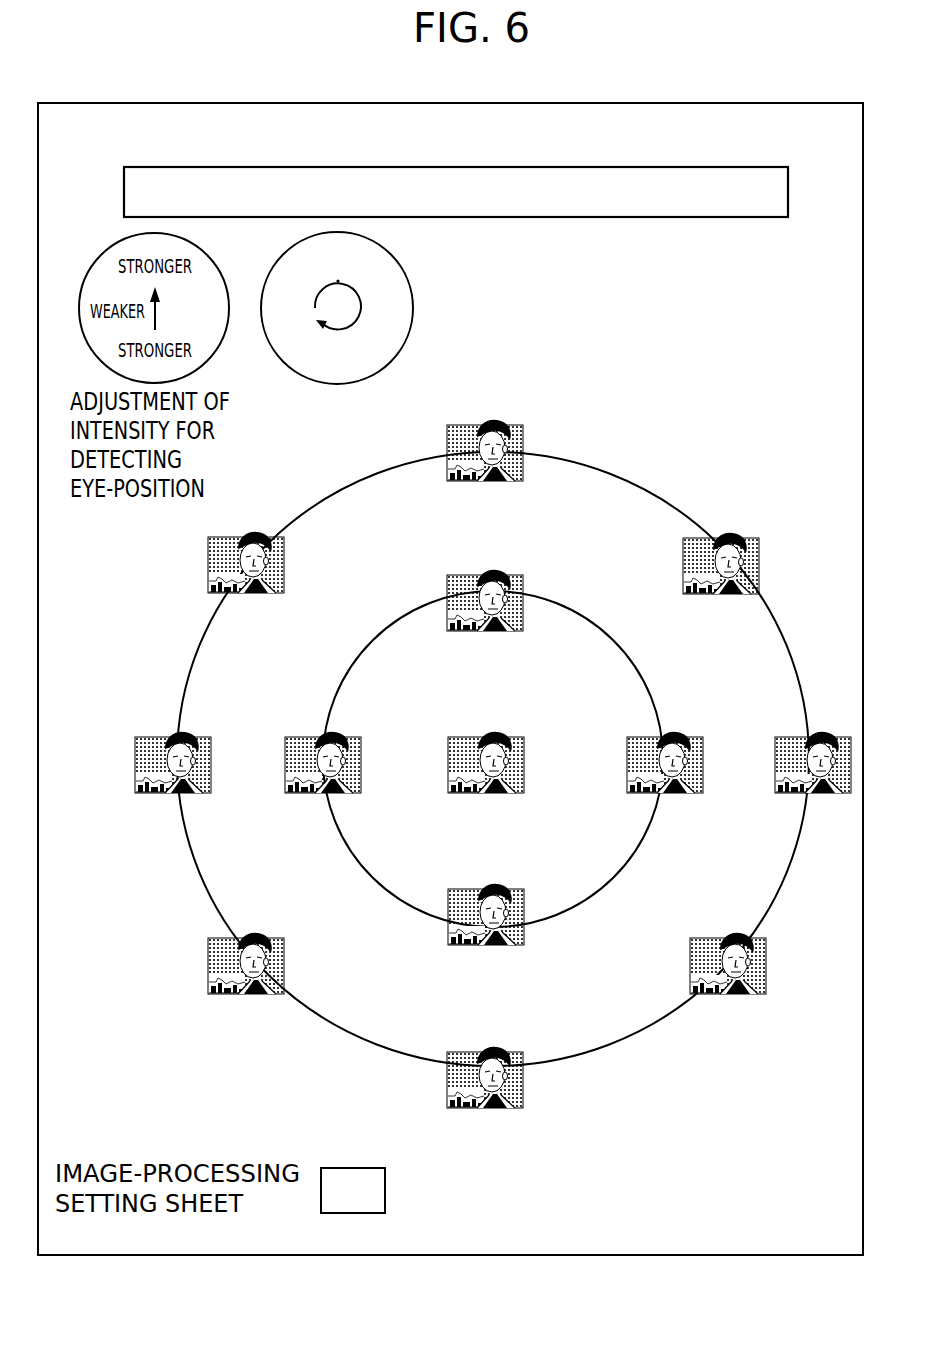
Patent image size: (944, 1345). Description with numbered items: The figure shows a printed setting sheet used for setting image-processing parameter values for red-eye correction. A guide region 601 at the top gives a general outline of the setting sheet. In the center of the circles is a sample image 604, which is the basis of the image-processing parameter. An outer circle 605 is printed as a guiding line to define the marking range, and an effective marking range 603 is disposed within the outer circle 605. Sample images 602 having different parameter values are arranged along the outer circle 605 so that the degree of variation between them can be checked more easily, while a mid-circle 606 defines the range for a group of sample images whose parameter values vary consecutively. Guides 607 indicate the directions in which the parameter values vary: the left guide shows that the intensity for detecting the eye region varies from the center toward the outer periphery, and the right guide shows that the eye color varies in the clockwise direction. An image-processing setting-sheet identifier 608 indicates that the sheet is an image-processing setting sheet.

The guide region 601 is at (703, 167).
The sample images 602 is at (740, 533).
The effective marking range 603 is at (493, 755).
The sample image 604 is at (515, 737).
The outer circle 605 is at (630, 1040).
The mid-circle 606 is at (585, 903).
The guides 607 is at (412, 284).
The image-processing setting-sheet identifier 608 is at (365, 1167).